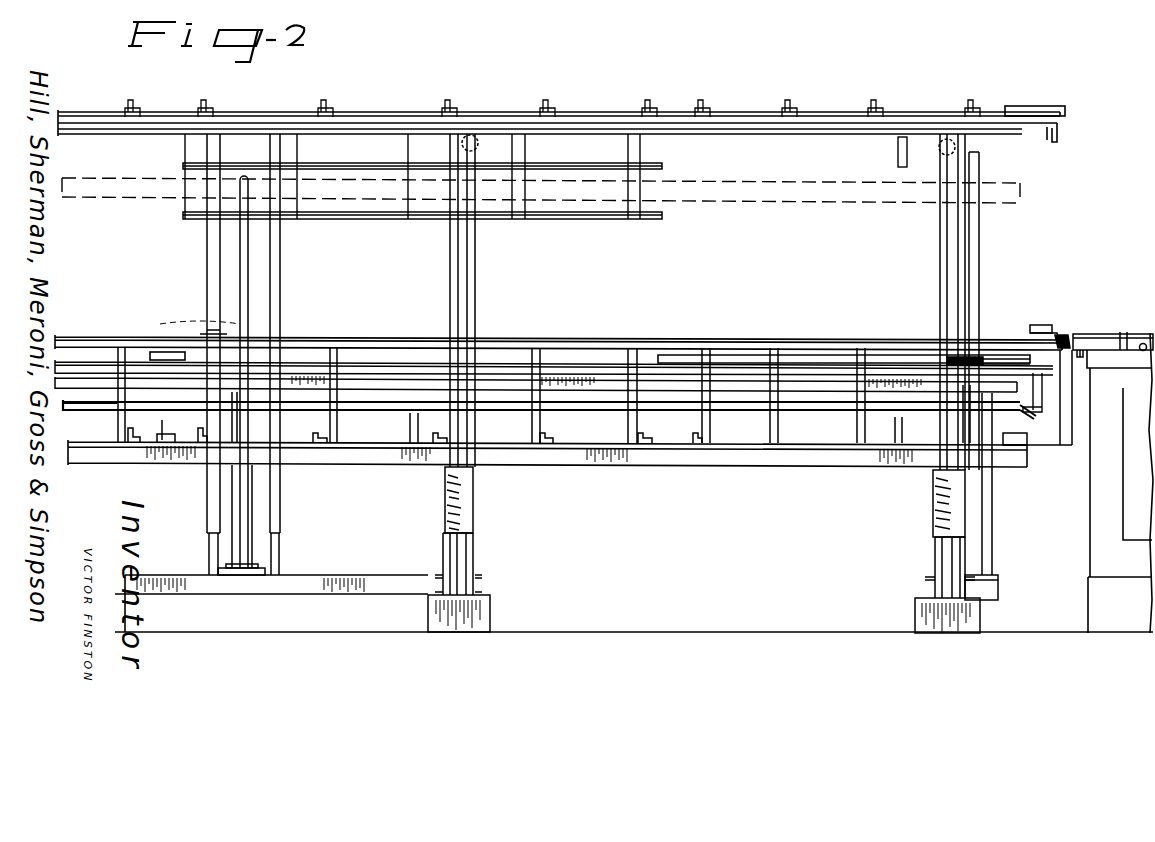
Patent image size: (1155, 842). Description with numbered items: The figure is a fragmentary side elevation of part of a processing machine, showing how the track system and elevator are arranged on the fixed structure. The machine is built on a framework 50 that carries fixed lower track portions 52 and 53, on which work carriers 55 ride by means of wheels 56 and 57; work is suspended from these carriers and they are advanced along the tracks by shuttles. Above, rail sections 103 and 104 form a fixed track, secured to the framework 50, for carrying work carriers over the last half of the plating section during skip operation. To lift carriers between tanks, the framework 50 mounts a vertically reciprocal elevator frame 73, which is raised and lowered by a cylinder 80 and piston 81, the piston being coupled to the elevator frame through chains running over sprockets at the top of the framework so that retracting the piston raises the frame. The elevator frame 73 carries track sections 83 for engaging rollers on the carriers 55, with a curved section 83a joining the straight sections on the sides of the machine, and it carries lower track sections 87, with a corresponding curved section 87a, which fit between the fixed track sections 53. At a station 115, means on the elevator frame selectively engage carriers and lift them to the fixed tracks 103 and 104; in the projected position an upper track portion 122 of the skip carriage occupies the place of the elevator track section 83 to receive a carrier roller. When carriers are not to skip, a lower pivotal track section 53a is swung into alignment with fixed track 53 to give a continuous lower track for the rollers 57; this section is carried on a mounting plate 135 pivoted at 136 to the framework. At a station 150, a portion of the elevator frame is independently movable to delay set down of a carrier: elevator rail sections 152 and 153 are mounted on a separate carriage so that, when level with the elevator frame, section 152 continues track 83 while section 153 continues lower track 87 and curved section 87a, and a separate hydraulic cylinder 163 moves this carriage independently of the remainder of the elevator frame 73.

The framework 50 is at (749, 112).
The fixed lower track portion 52 is at (518, 342).
The fixed lower track portion 53 is at (366, 407).
The lower pivotal track section 53a is at (173, 409).
The work carrier 55 is at (1106, 333).
The wheel 56 is at (1062, 337).
The wheel 57 is at (1023, 408).
The elevator frame 73 is at (752, 168).
The cylinder 80 is at (242, 510).
The piston 81 is at (243, 267).
The track section 83 is at (745, 358).
The curved section 83a is at (1007, 360).
The lower track section 87 is at (814, 412).
The curved elevator track section 87a is at (1013, 412).
The fixed track 103 is at (548, 168).
The fixed track 104 is at (542, 219).
The station 115 is at (192, 335).
The upper track portion 122 is at (168, 353).
The mounting plate 135 is at (162, 420).
The pivot 136 is at (163, 433).
The station 150 is at (986, 341).
The elevator rail section 152 is at (960, 358).
The elevator rail section 153 is at (967, 412).
The hydraulic cylinder 163 is at (988, 512).